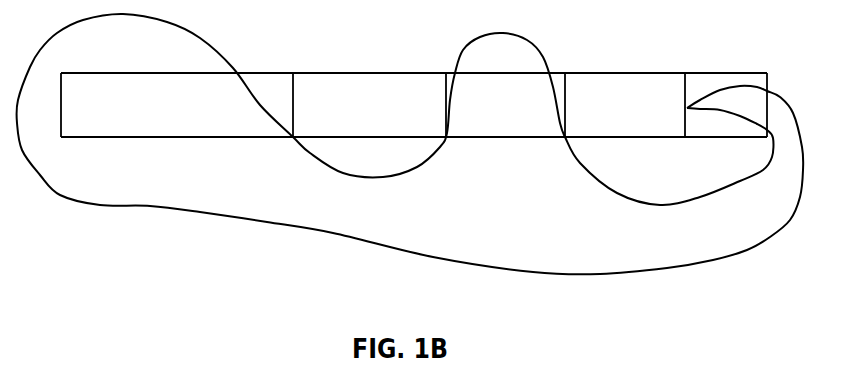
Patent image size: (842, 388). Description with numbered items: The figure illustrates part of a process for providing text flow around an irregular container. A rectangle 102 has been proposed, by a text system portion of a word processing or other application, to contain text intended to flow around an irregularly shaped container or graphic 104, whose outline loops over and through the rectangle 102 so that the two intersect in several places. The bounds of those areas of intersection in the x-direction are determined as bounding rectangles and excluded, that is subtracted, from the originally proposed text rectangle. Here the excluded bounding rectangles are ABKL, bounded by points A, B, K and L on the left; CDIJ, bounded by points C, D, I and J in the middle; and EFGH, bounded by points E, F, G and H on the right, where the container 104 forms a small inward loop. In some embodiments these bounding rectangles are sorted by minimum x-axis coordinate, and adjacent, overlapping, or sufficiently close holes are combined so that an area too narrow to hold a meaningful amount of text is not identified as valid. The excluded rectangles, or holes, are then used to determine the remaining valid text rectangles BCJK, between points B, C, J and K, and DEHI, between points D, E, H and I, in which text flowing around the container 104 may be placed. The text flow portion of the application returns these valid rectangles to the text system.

The rectangle 102 is at (350, 73).
The irregularly shaped container 104 is at (267, 222).
The point A is at (61, 76).
The point B is at (293, 76).
The point C is at (438, 76).
The point D is at (566, 76).
The point E is at (685, 76).
The point F is at (767, 76).
The point G is at (752, 136).
The point H is at (685, 136).
The point I is at (559, 136).
The point J is at (453, 136).
The point K is at (285, 136).
The point L is at (62, 136).